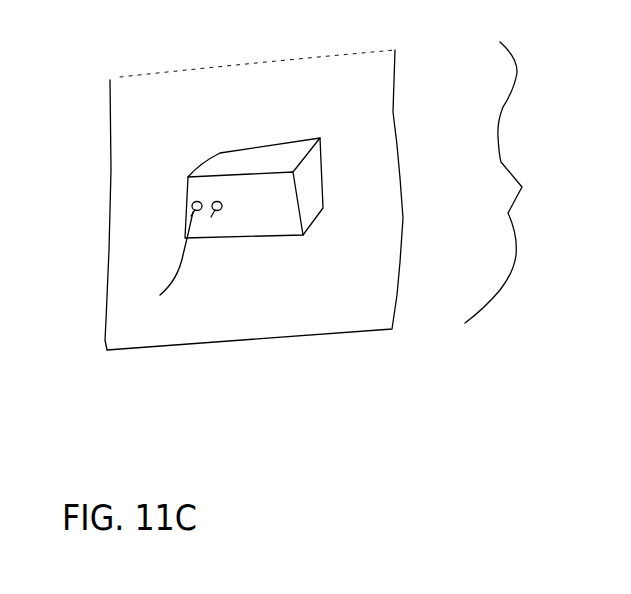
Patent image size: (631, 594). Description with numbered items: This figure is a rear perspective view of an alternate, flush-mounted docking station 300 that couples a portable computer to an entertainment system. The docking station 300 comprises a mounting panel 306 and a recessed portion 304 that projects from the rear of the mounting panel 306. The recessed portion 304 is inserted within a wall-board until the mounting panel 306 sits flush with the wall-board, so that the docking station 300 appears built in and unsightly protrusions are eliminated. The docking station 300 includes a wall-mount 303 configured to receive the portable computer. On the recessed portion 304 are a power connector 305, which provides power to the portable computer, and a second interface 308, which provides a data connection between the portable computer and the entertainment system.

The docking station 300 is at (90, 285).
The wall-mount 303 is at (519, 182).
The recessed portion 304 is at (308, 200).
The power connector 305 is at (217, 218).
The mounting panel 306 is at (375, 87).
The second interface 308 is at (163, 269).